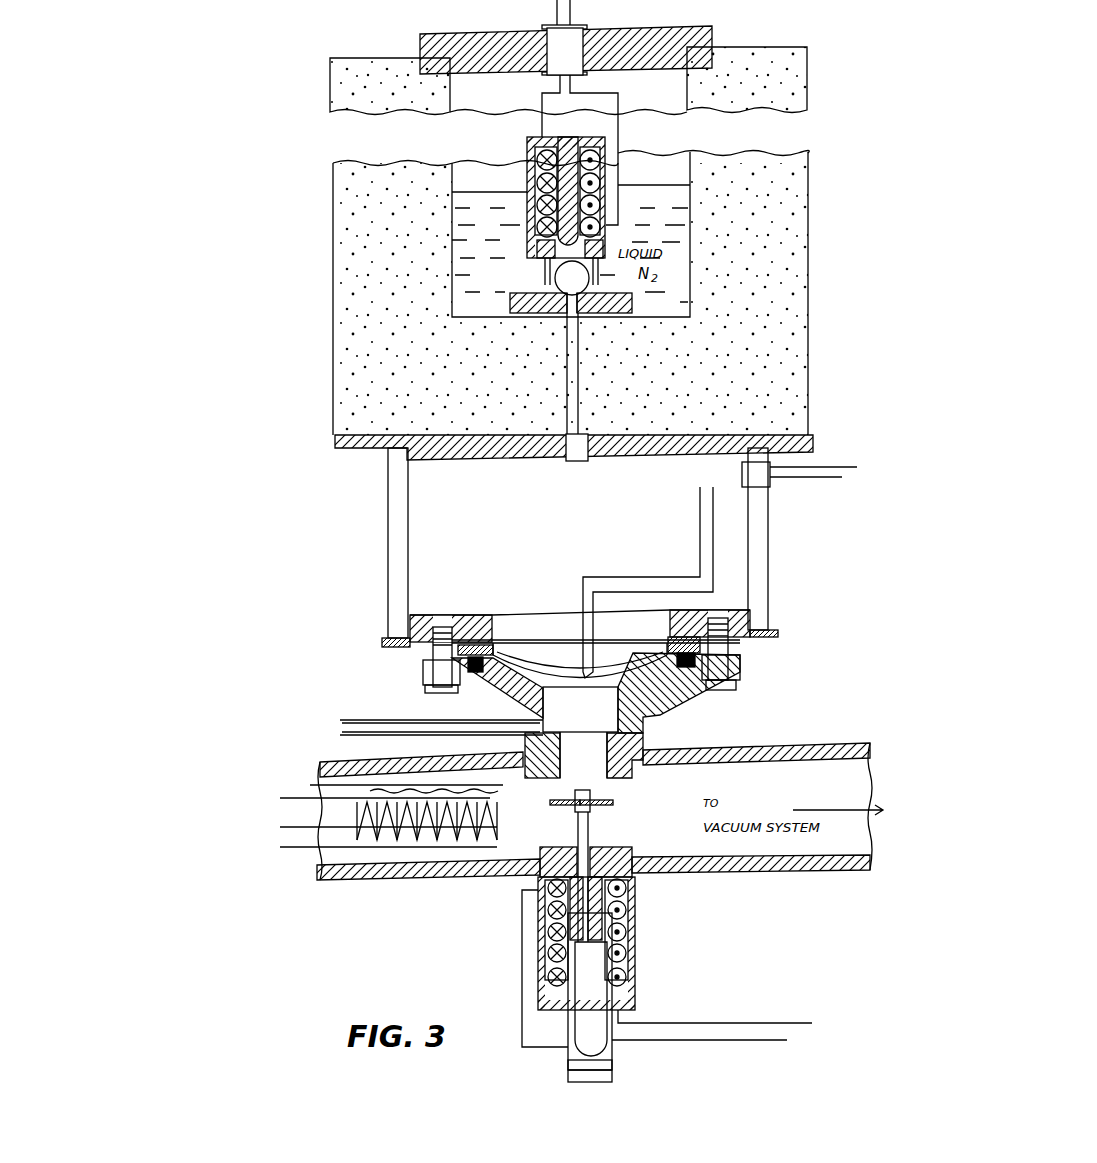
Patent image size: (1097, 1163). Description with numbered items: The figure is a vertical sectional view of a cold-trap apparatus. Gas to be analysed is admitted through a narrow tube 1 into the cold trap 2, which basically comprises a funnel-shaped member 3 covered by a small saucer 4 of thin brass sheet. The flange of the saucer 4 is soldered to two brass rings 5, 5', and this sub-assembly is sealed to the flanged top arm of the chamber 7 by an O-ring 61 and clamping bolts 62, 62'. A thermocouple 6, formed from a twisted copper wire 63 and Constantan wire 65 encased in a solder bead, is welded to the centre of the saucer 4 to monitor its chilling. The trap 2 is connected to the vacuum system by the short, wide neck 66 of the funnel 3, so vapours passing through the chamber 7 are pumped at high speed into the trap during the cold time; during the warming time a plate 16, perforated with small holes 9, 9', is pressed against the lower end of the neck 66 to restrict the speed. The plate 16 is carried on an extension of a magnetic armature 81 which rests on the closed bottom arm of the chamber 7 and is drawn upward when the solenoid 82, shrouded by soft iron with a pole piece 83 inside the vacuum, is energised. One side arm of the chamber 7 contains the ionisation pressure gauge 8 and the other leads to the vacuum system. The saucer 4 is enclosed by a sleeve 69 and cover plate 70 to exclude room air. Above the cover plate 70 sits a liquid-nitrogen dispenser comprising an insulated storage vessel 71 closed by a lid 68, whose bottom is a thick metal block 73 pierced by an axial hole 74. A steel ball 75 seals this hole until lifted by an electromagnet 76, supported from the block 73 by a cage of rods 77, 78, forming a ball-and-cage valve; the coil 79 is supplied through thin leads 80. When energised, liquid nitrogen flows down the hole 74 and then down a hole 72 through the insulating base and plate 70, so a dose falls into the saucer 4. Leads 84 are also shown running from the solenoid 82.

The narrow tube 1 is at (340, 728).
The cold trap 2 is at (580, 709).
The funnel-shaped member 3 is at (660, 710).
The saucer 4 is at (540, 670).
The brass ring 5 is at (577, 612).
The brass ring 5' is at (581, 619).
The thermocouple 6 is at (566, 600).
The chamber 7 is at (467, 873).
The ionisation pressure gauge 8 is at (413, 812).
The small hole 9 is at (602, 866).
The small hole 9' is at (551, 821).
The plate 16 is at (615, 803).
The O-ring 61 is at (686, 696).
The clamping bolt 62 is at (412, 660).
The clamping bolt 62' is at (759, 654).
The copper wire 63 is at (822, 467).
The Constantan wire 65 is at (820, 478).
The neck 66 is at (610, 778).
The lid 68 is at (712, 28).
The sleeve 69 is at (769, 573).
The cover plate 70 is at (430, 452).
The storage vessel 71 is at (690, 268).
The hole 72 is at (582, 402).
The metal block 73 is at (615, 313).
The axial hole 74 is at (553, 315).
The steel ball 75 is at (554, 280).
The electromagnet 76 is at (527, 205).
The rod 77 is at (545, 263).
The rod 78 is at (643, 300).
The coil 79 is at (601, 208).
The leads 80 is at (542, 122).
The magnetic armature 81 is at (592, 975).
The solenoid 82 is at (636, 917).
The pole piece 83 is at (633, 858).
The leads 84 is at (707, 1040).